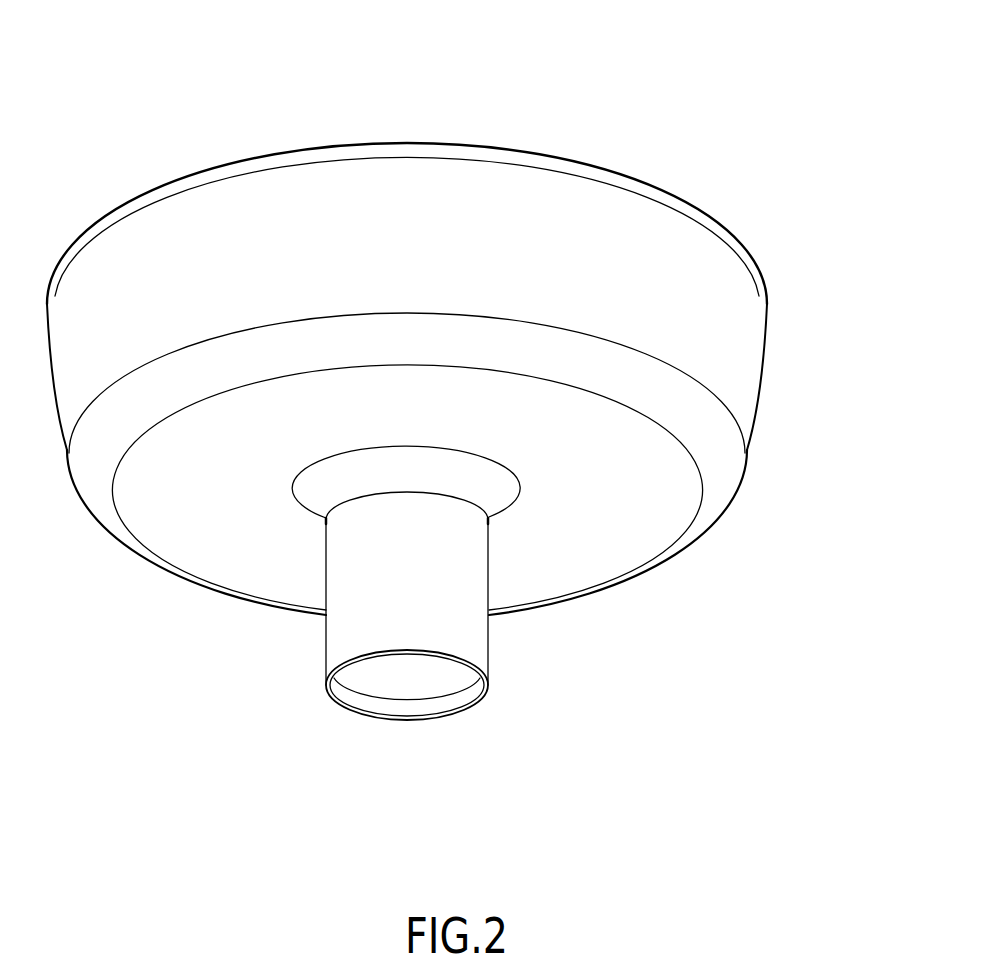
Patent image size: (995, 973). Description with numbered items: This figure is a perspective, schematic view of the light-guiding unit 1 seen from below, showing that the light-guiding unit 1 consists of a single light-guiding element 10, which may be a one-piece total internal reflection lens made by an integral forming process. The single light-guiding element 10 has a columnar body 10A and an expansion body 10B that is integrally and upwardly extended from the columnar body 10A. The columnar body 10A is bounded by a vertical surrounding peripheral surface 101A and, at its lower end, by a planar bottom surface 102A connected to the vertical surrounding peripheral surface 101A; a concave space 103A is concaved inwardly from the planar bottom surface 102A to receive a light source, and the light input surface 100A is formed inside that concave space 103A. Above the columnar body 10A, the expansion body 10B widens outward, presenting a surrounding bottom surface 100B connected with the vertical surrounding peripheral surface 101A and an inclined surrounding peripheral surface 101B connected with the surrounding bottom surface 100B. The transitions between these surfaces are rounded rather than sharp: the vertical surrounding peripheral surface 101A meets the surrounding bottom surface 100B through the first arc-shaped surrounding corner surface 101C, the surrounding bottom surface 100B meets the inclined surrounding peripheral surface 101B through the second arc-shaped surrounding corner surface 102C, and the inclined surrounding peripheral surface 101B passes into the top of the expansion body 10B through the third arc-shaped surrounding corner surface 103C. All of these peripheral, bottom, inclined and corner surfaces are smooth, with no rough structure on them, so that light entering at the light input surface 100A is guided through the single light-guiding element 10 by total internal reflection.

The light-guiding unit 1 is at (457, 411).
The single light-guiding element 10 is at (457, 474).
The columnar body 10A is at (413, 662).
The expansion body 10B is at (457, 413).
The light input surface 100A is at (409, 675).
The vertical surrounding peripheral surface 101A is at (472, 637).
The planar bottom surface 102A is at (480, 703).
The concave space 103A is at (365, 698).
The surrounding bottom surface 100B is at (620, 508).
The inclined surrounding peripheral surface 101B is at (742, 371).
The first arc-shaped surrounding corner surface 101C is at (492, 495).
The second arc-shaped surrounding corner surface 102C is at (723, 480).
The third arc-shaped surrounding corner surface 103C is at (682, 210).